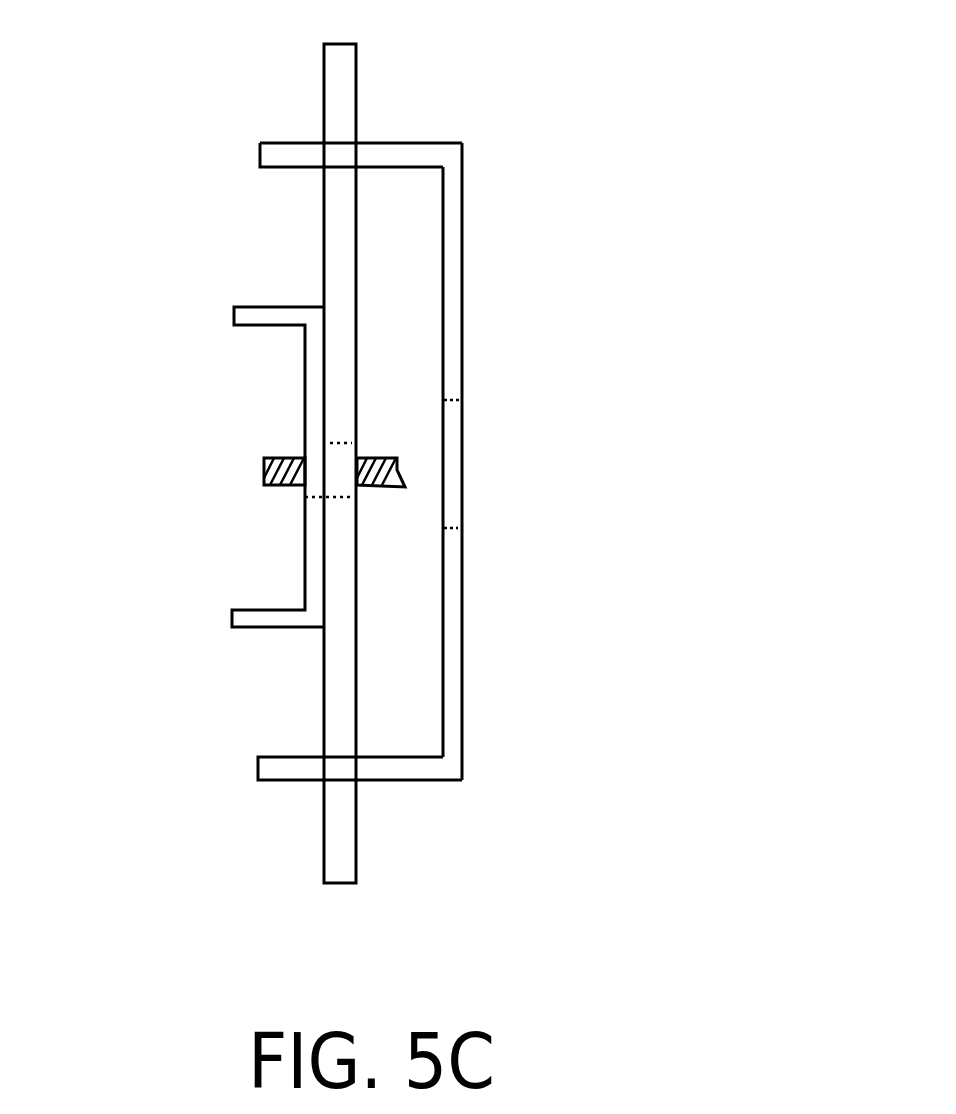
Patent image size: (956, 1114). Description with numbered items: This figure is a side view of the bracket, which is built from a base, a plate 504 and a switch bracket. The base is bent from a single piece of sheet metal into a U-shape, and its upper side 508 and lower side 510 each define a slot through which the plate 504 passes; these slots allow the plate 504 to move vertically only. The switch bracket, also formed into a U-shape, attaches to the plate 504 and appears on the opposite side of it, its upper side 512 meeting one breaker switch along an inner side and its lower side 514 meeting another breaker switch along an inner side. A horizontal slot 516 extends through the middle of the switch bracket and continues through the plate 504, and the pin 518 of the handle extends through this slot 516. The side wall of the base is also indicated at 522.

The plate 504 is at (342, 870).
The upper side 508 is at (387, 141).
The lower side 510 is at (382, 783).
The upper side 512 is at (263, 305).
The lower side 514 is at (257, 630).
The horizontal slot 516 is at (316, 444).
The pin 518 is at (275, 457).
The frame wall 522 is at (463, 420).